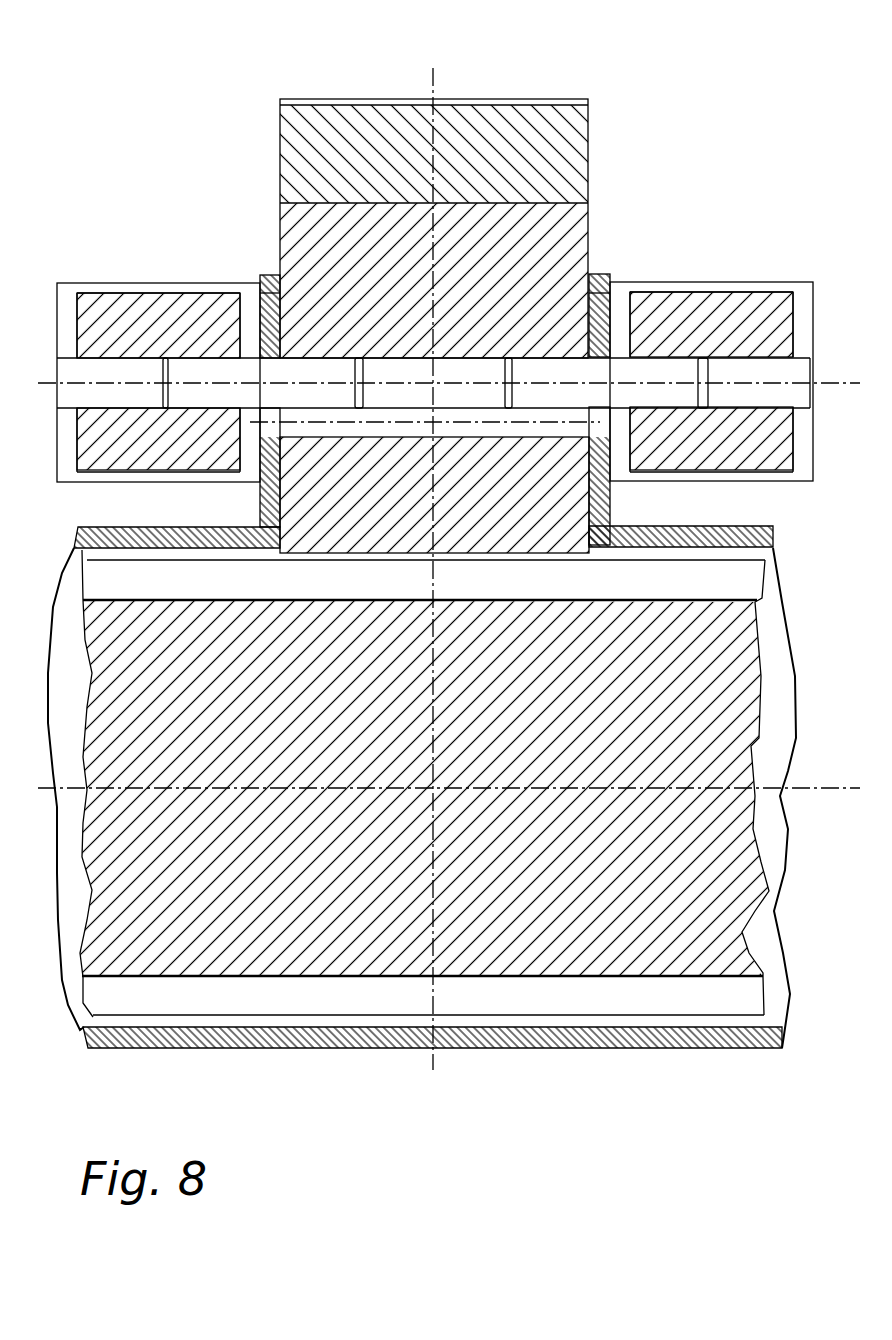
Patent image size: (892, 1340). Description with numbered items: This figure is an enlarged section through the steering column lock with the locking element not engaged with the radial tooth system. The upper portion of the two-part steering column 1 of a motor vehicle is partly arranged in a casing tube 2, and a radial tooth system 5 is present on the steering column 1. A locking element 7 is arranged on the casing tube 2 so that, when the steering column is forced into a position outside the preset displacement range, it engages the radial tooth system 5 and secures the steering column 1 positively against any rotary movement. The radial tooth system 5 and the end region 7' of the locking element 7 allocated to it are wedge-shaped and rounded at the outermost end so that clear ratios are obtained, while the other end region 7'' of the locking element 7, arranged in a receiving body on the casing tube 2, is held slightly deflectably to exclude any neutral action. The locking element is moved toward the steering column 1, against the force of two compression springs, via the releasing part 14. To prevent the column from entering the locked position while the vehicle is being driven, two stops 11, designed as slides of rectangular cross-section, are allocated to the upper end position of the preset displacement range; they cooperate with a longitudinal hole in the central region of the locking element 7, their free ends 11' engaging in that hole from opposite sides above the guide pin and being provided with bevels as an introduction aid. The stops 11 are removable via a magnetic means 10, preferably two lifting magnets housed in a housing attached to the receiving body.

The steering column 1 is at (422, 864).
The casing tube 2 is at (428, 853).
The radial tooth system 5 is at (423, 787).
The locking element 7 is at (434, 406).
The end region of the locking element 7' is at (401, 575).
The other end region of the locking element 7'' is at (434, 180).
The magnetic means 10 is at (432, 236).
The stops 11 is at (449, 395).
The free ends of the stops 11' is at (435, 205).
The releasing part 14 is at (434, 102).